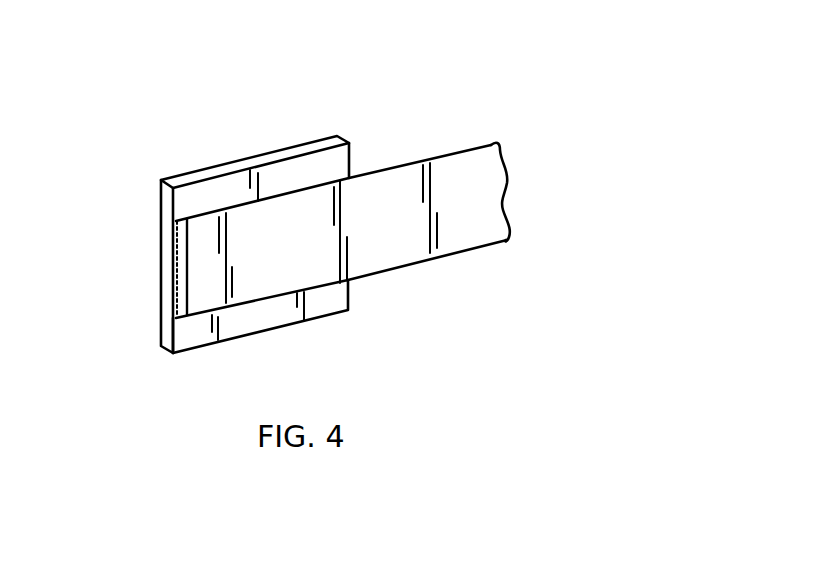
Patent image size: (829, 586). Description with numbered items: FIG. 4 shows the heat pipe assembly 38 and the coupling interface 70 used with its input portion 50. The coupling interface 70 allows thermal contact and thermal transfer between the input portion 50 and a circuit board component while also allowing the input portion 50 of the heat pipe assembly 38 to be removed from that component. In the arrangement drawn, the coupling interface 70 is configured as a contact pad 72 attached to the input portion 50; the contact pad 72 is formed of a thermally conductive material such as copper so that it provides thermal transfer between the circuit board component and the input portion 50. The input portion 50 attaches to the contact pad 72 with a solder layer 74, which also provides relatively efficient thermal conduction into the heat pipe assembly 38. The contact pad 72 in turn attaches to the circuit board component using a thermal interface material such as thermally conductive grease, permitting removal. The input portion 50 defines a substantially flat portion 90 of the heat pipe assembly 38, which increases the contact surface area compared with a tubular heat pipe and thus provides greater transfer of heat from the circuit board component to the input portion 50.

The coupling interface 70 is at (393, 56).
The input portion 50 is at (297, 175).
The contact pad 72 is at (207, 170).
The solder layer 74 is at (173, 272).
The substantially flat portion 90 is at (197, 234).
The heat pipe assembly 38 is at (458, 251).